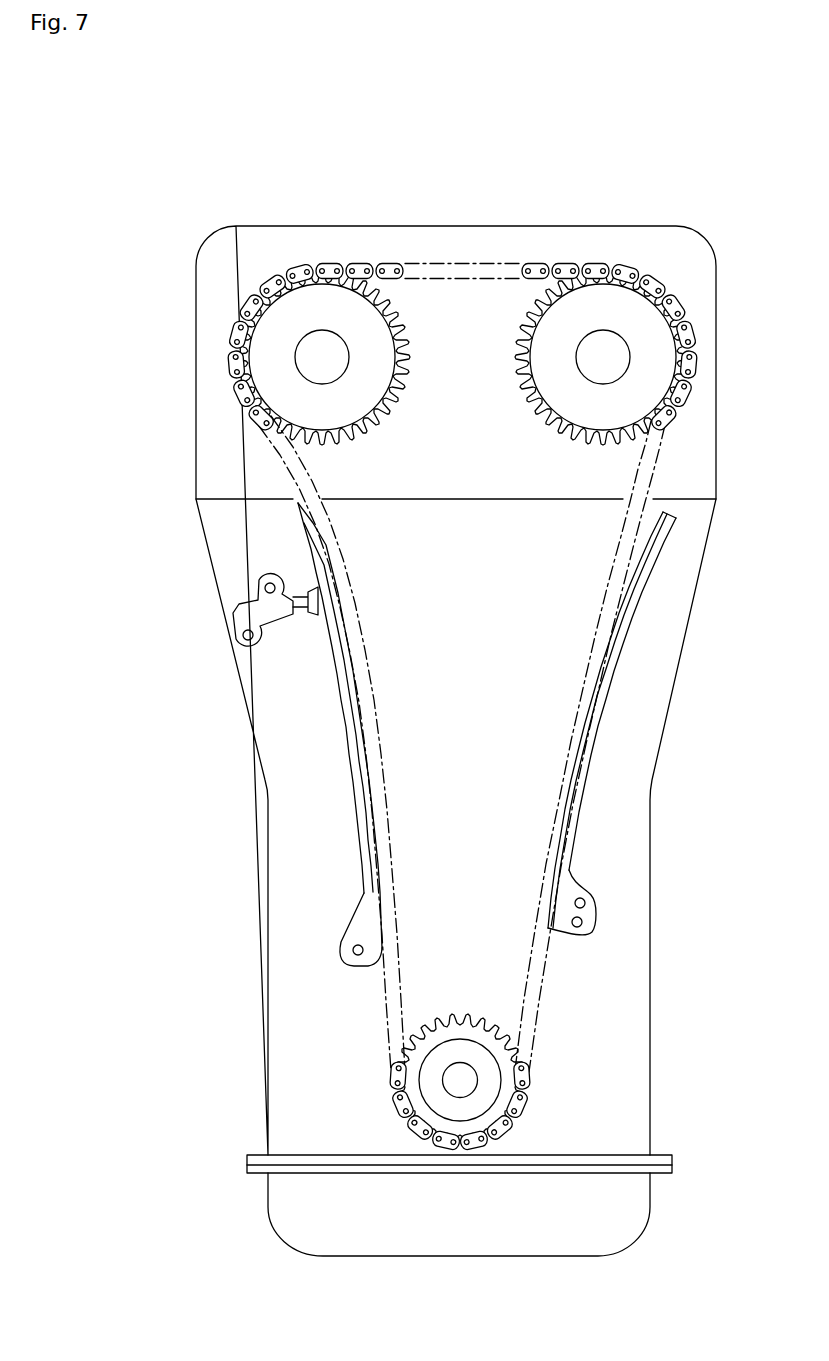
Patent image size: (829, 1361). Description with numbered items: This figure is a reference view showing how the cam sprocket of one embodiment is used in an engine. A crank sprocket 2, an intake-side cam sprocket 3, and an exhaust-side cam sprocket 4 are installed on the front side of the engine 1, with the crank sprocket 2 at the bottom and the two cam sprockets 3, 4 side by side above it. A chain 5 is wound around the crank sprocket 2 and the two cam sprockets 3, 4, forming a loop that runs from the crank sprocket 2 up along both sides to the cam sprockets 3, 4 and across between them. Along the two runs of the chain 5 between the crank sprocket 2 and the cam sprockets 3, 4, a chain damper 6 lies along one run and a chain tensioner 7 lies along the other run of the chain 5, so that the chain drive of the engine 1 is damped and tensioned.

The engine 1 is at (256, 845).
The crank sprocket 2 is at (459, 1030).
The intake-side cam sprocket 3 is at (598, 313).
The exhaust-side cam sprocket 4 is at (323, 305).
The chain 5 is at (388, 273).
The chain damper 6 is at (619, 702).
The chain tensioner 7 is at (337, 745).